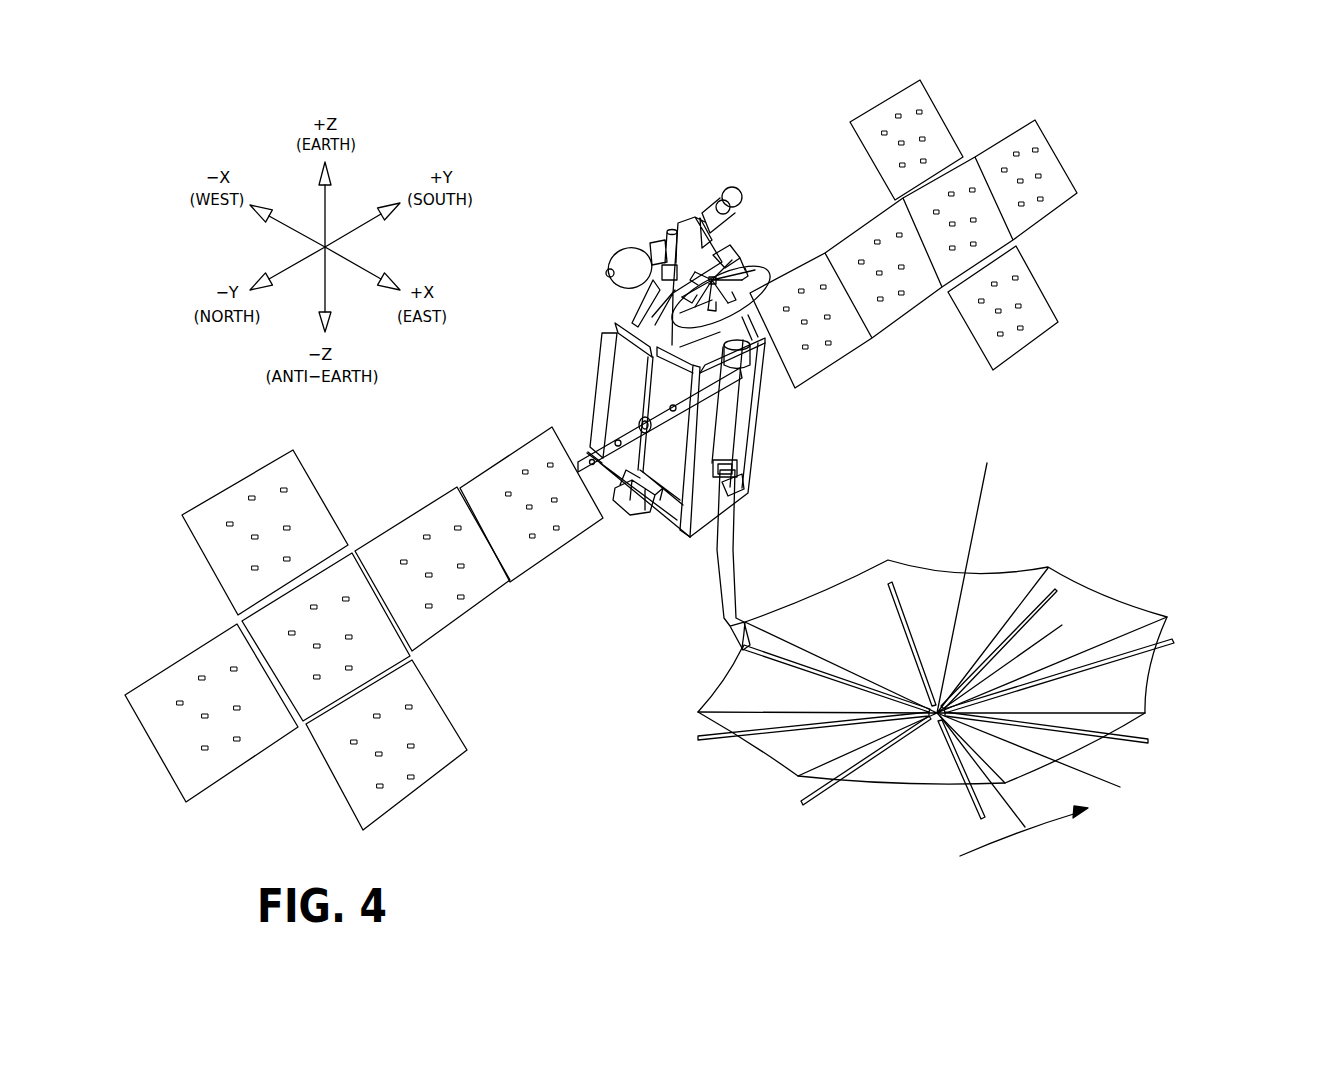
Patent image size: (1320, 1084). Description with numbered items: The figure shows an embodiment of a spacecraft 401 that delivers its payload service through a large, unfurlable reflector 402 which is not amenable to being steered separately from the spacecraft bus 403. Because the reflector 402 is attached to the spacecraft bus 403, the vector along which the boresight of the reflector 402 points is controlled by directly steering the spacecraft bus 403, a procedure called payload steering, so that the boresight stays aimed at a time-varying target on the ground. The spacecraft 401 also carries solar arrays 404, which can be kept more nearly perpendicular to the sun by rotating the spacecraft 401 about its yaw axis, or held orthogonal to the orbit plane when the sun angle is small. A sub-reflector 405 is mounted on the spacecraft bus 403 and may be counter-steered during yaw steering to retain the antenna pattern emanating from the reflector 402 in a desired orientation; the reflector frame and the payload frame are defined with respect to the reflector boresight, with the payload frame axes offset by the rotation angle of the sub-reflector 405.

The spacecraft 401 is at (646, 162).
The reflector 402 is at (836, 607).
The spacecraft bus 403 is at (732, 427).
The solar arrays 404 is at (1028, 323).
The sub-reflector 405 is at (764, 262).